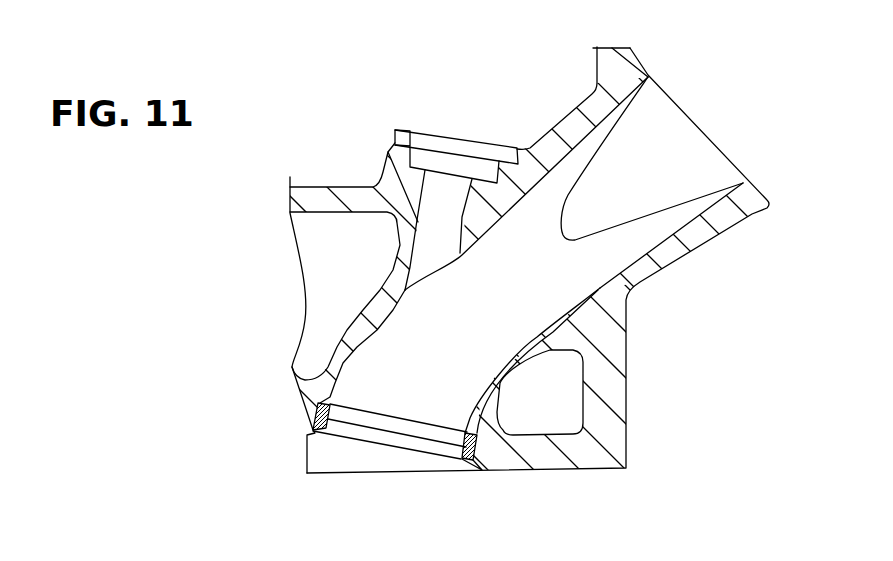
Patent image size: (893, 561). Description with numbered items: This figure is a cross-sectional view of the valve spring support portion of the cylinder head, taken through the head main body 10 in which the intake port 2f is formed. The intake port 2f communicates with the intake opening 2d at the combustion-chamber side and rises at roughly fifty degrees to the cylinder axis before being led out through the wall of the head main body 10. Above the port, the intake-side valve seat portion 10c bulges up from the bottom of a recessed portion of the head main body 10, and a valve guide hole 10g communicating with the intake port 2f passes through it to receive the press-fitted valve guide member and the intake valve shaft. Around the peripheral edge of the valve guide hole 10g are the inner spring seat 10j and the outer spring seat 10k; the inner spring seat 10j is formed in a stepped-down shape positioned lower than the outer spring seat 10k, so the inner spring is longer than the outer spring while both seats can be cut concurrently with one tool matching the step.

The head main body 10 is at (629, 386).
The intake-side valve seat portion 10c is at (387, 147).
The outer spring seat 10k is at (408, 129).
The inner spring seat 10j is at (422, 163).
The valve guide hole 10g is at (457, 267).
The intake port 2f is at (650, 258).
The intake opening 2d is at (463, 447).